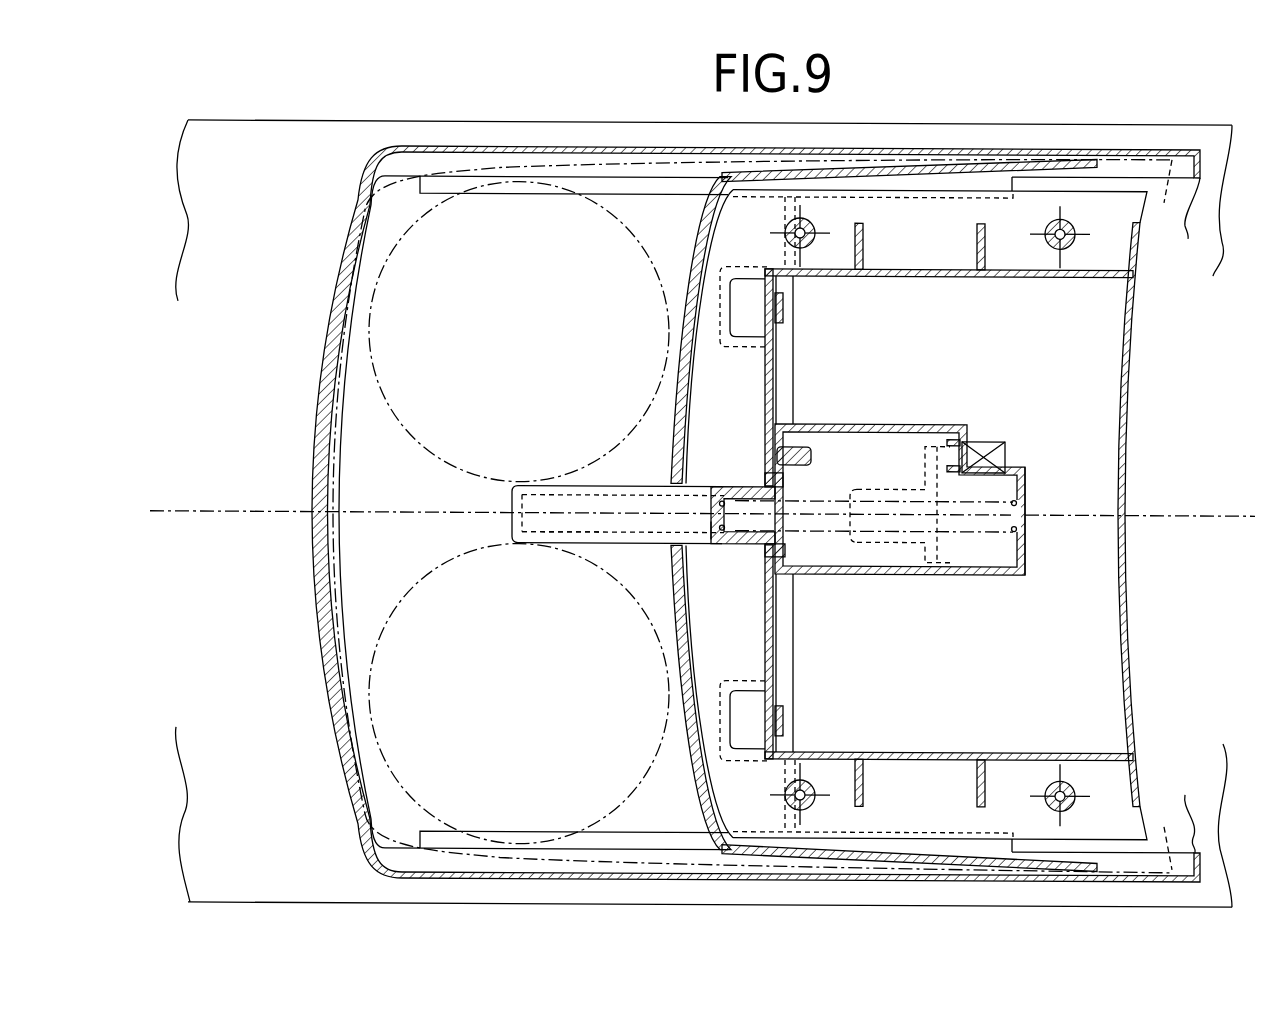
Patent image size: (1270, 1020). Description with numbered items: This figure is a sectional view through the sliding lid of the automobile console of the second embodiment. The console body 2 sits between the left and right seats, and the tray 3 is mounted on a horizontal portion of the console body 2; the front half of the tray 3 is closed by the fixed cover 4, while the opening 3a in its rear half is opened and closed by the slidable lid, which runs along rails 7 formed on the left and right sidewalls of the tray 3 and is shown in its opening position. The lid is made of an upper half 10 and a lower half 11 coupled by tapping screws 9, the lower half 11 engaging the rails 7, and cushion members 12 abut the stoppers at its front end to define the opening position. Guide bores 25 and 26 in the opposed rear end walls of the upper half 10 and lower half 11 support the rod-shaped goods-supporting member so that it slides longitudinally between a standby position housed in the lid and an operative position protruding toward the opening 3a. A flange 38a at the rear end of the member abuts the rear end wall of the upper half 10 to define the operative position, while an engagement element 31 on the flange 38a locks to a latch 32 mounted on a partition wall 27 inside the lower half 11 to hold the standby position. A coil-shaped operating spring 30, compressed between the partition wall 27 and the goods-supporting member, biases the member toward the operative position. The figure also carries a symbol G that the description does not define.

The console body 2 is at (227, 114).
The tray 3 is at (537, 146).
The opening 3a is at (350, 464).
The disc guide path G is at (400, 238).
The rails 7 is at (620, 189).
The upper lid half 10 is at (887, 181).
The fixed cover 4 is at (795, 375).
The lower lid half 11 is at (920, 276).
The tapping screws 9 is at (787, 225).
The cushion members 12 is at (783, 306).
The flange 38a is at (768, 478).
The guide bore 26 is at (753, 543).
The guide bore 25 is at (663, 487).
The coil-shaped operating spring 30 is at (1013, 529).
The partition wall 27 is at (1027, 544).
The latch 32 is at (978, 439).
The engagement element 31 is at (813, 454).